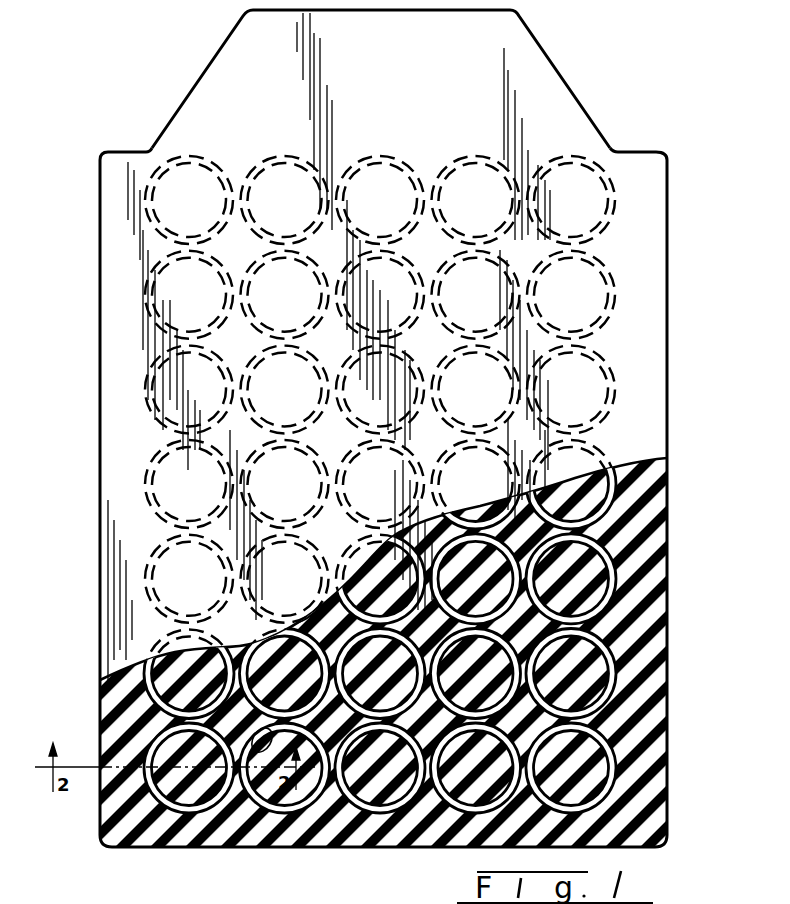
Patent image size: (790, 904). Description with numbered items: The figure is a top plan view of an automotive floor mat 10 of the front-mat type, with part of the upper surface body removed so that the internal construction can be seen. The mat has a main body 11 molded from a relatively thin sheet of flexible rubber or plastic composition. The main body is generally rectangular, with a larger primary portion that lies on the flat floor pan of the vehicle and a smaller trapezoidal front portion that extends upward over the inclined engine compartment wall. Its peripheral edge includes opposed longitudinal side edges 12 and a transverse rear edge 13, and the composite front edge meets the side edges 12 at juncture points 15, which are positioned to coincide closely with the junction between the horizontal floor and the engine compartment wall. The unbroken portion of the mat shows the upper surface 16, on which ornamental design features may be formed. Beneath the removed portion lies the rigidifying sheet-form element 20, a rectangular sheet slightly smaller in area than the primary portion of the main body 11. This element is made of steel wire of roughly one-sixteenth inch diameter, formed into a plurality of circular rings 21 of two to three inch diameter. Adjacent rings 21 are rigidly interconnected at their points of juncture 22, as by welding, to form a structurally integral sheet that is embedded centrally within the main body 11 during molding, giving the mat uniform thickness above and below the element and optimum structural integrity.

The automotive floor mat 10 is at (556, 68).
The main body 11 is at (120, 395).
The longitudinal side edges 12 is at (98, 300).
The transverse rear edge 13 is at (243, 848).
The juncture points 15 is at (99, 157).
The upper surface 16 is at (428, 100).
The rigidifying sheet-form element 20 is at (622, 579).
The circular rings 21 is at (586, 727).
The points of juncture 22 is at (270, 730).